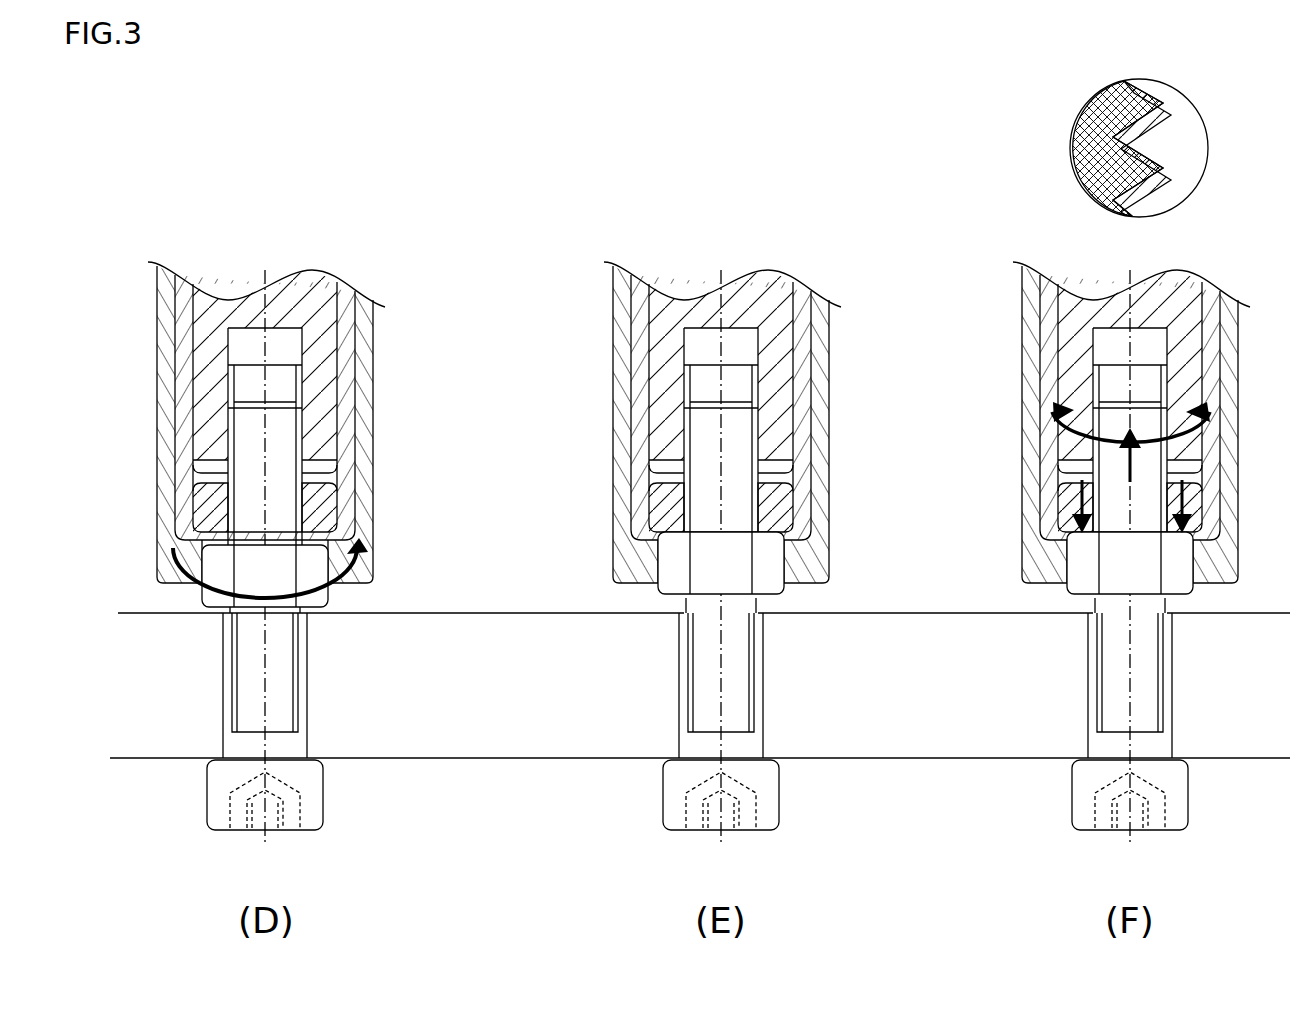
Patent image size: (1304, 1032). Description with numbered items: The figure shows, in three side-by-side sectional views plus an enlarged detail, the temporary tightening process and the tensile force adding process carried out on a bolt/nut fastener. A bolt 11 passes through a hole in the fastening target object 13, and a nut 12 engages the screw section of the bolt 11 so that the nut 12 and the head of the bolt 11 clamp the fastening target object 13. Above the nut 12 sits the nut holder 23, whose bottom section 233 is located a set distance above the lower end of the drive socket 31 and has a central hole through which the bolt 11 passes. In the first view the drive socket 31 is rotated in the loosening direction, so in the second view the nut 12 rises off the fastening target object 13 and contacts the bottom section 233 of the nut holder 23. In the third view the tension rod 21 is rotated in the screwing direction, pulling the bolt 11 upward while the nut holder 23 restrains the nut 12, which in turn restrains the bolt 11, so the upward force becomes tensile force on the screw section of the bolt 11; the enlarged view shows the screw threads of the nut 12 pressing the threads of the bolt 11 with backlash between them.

The bolt 11 is at (233, 655).
The nut 12 is at (200, 590).
The fastening target object 13 is at (142, 613).
The tension rod 21 is at (322, 390).
The nut holder 23 is at (353, 441).
The bottom section 233 is at (333, 503).
The drive socket 31 is at (373, 553).